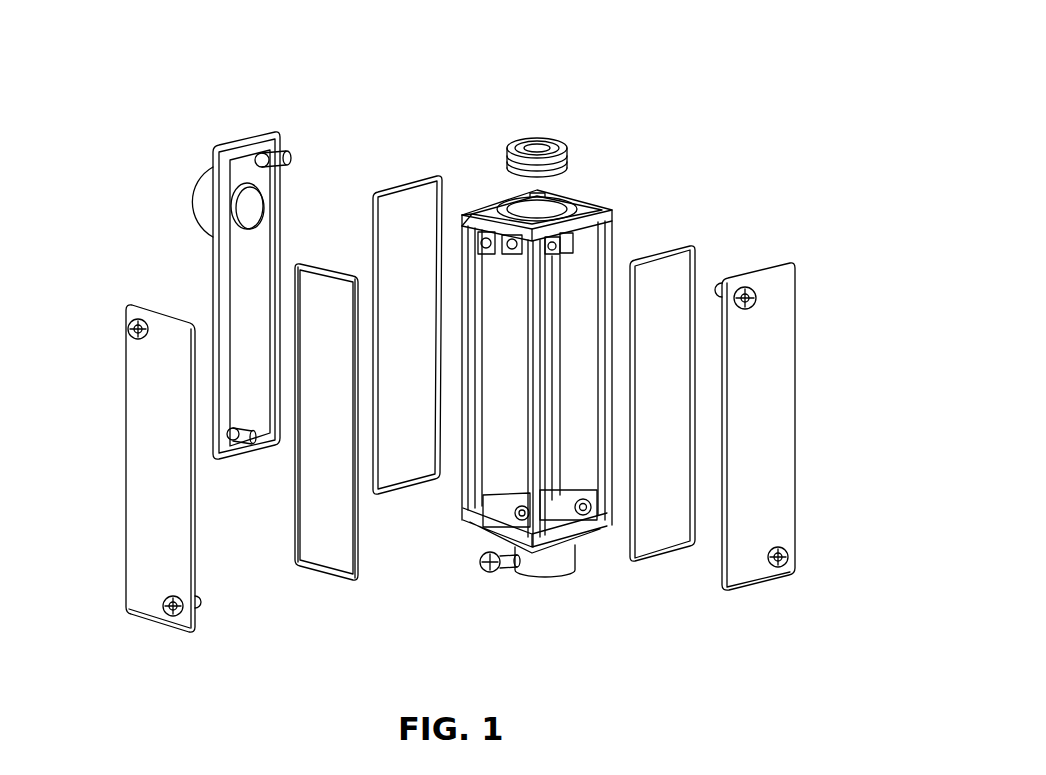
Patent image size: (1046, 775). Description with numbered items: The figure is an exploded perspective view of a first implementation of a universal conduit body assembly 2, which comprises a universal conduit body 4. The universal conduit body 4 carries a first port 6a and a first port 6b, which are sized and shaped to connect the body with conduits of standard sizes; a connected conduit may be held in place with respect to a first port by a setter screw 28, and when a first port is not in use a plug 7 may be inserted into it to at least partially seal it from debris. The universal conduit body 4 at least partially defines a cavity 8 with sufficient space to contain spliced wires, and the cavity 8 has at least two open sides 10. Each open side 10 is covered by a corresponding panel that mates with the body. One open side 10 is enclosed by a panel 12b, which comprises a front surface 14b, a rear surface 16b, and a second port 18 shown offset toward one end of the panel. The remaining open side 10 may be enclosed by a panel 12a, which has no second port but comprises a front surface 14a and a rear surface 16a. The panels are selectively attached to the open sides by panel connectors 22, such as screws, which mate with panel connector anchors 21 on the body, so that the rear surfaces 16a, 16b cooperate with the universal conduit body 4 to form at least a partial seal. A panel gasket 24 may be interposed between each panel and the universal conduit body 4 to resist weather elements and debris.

The universal conduit body assembly 2 is at (746, 150).
The universal conduit body 4 is at (607, 190).
The first port 6a is at (567, 558).
The first port 6b is at (520, 207).
The plug 7 is at (553, 140).
The cavity 8 is at (550, 423).
The open side 10 is at (585, 262).
The panel 12a is at (468, 447).
The panel 12b is at (240, 265).
The front surface 14a is at (164, 468).
The front surface 14b is at (240, 266).
The rear surface 16a is at (193, 540).
The rear surface 16b is at (265, 243).
The second port 18 is at (262, 203).
The panel connector anchor 21 is at (470, 218).
The panel connector 22 is at (292, 150).
The panel gasket 24 is at (330, 578).
The setter screw 28 is at (500, 576).